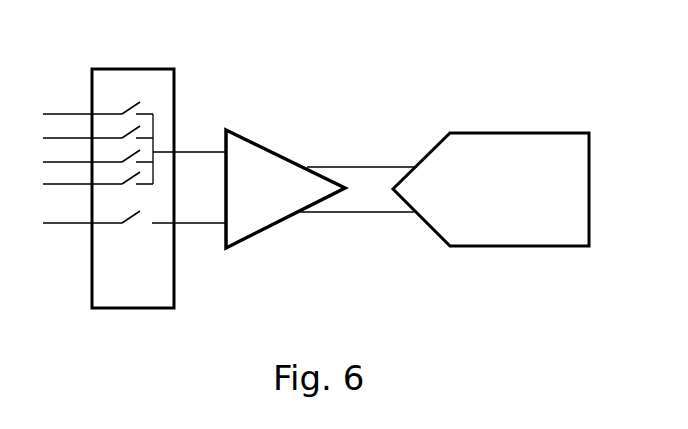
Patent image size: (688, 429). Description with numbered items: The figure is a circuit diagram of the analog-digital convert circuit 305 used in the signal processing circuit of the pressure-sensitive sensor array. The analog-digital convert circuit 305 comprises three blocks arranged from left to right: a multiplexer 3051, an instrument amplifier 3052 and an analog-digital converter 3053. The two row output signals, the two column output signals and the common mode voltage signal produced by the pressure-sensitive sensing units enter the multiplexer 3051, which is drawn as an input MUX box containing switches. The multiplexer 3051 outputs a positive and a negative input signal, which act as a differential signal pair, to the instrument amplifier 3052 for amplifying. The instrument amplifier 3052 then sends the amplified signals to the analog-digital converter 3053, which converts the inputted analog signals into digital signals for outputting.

The analog-digital convert circuit 305 is at (74, 52).
The multiplexer 3051 is at (142, 69).
The instrument amplifier 3052 is at (258, 145).
The analog-digital converter 3053 is at (492, 133).